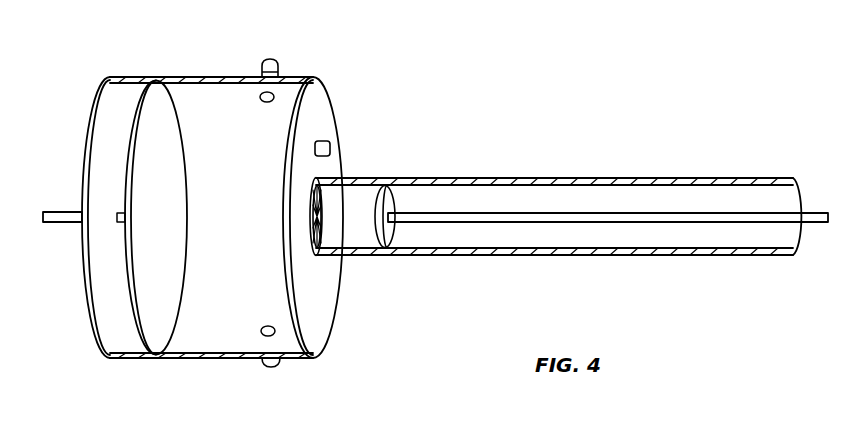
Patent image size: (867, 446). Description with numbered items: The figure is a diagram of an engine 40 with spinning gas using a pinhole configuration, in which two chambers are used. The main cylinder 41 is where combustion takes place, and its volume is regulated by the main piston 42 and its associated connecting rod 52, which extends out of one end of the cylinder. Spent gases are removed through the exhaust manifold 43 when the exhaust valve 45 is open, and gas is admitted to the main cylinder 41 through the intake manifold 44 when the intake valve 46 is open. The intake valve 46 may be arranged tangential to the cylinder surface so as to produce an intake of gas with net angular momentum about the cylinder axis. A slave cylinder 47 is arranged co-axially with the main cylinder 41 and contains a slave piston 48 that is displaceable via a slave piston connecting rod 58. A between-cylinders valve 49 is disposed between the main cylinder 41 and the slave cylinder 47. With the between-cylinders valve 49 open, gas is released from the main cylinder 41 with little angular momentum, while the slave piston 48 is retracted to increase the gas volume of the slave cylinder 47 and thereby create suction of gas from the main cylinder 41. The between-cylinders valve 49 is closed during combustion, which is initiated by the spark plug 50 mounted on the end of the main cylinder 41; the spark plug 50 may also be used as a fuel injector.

The engine 40 is at (183, 30).
The main cylinder 41 is at (190, 97).
The main piston 42 is at (133, 287).
The exhaust manifold 43 is at (274, 367).
The intake manifold 44 is at (276, 58).
The exhaust valve 45 is at (264, 336).
The intake valve 46 is at (260, 94).
The slave cylinder 47 is at (528, 195).
The slave piston 48 is at (393, 203).
The between-cylinders valve 49 is at (321, 227).
The spark plug 50 is at (332, 148).
The connecting rod 52 is at (63, 210).
The slave piston connecting rod 58 is at (673, 212).